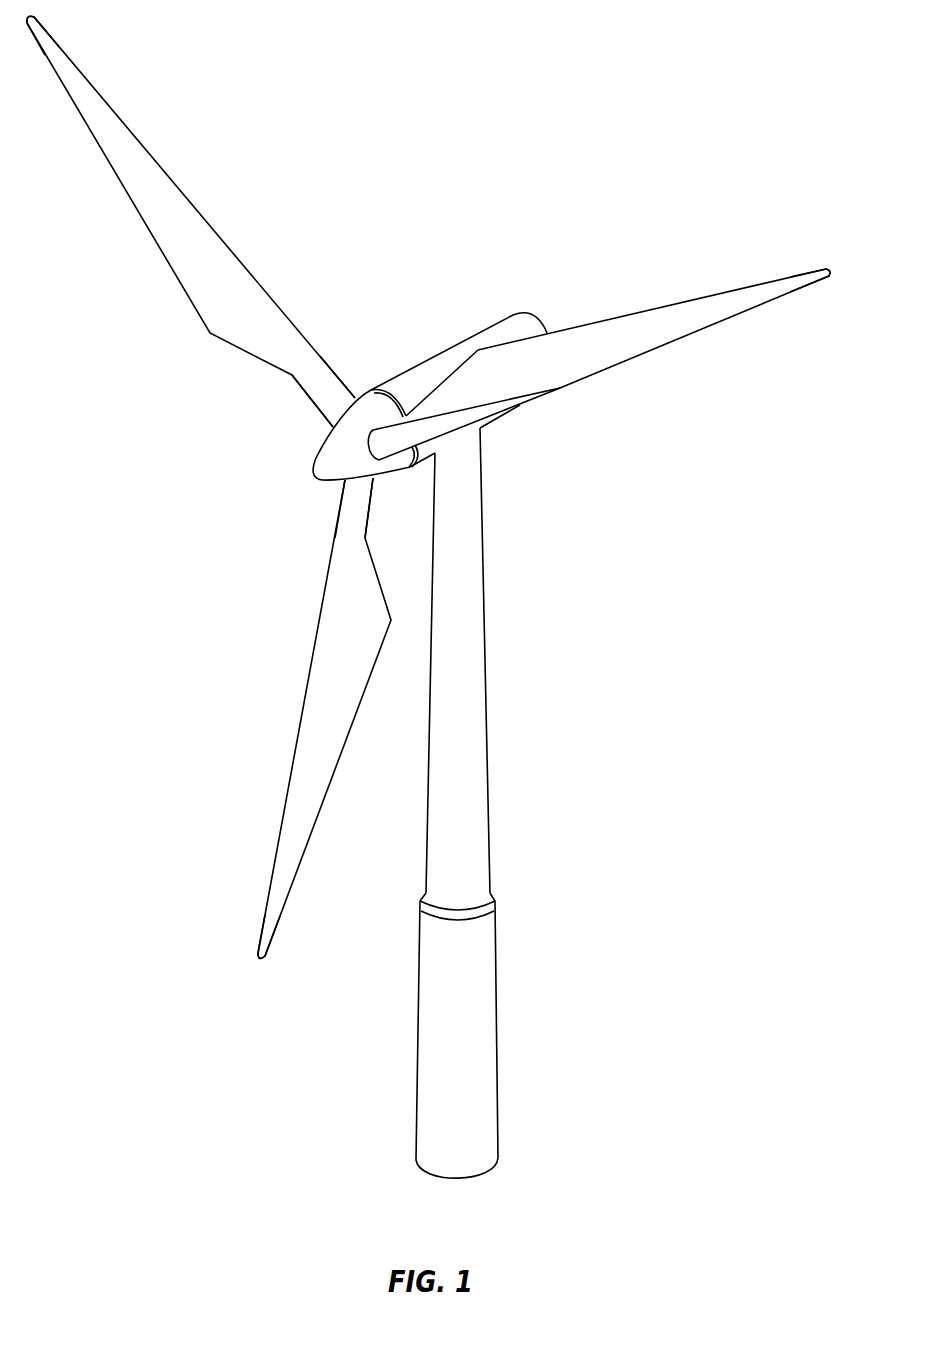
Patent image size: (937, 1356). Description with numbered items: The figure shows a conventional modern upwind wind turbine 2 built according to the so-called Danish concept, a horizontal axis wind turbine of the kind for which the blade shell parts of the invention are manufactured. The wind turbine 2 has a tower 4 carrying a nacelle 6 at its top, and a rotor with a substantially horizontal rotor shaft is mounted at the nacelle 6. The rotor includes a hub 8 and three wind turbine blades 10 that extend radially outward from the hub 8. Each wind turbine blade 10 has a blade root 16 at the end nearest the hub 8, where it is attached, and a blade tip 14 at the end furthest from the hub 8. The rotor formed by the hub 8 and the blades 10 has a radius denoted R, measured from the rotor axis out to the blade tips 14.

The wind turbine 2 is at (428, 597).
The tower 4 is at (475, 665).
The nacelle 6 is at (420, 373).
The hub 8 is at (333, 457).
The wind turbine blade 10 is at (223, 310).
The blade tip 14 is at (72, 74).
The blade root 16 is at (340, 412).